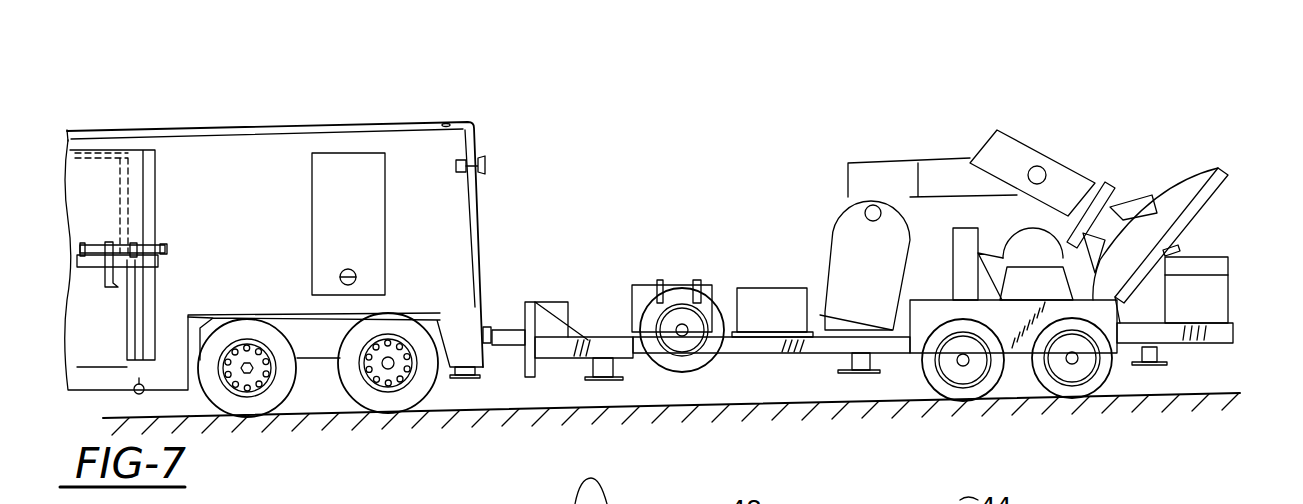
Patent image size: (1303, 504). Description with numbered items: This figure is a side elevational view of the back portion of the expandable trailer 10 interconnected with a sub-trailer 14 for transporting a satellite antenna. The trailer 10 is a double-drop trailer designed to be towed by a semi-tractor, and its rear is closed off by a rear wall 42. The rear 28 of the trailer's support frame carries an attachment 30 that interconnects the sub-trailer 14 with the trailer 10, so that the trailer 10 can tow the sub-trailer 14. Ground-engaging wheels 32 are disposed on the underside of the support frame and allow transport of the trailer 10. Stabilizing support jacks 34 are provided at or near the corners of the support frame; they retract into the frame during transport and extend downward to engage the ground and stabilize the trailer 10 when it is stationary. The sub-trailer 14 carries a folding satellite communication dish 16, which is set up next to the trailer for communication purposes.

The expandable trailer 10 is at (285, 103).
The sub-trailer 14 is at (930, 124).
The folding satellite communication dish 16 is at (1110, 183).
The rear of the support frame 28 is at (485, 357).
The attachment 30 is at (492, 327).
The ground-engaging wheels 32 is at (342, 364).
The stabilizing support jacks 34 is at (462, 378).
The rear wall 42 is at (477, 245).